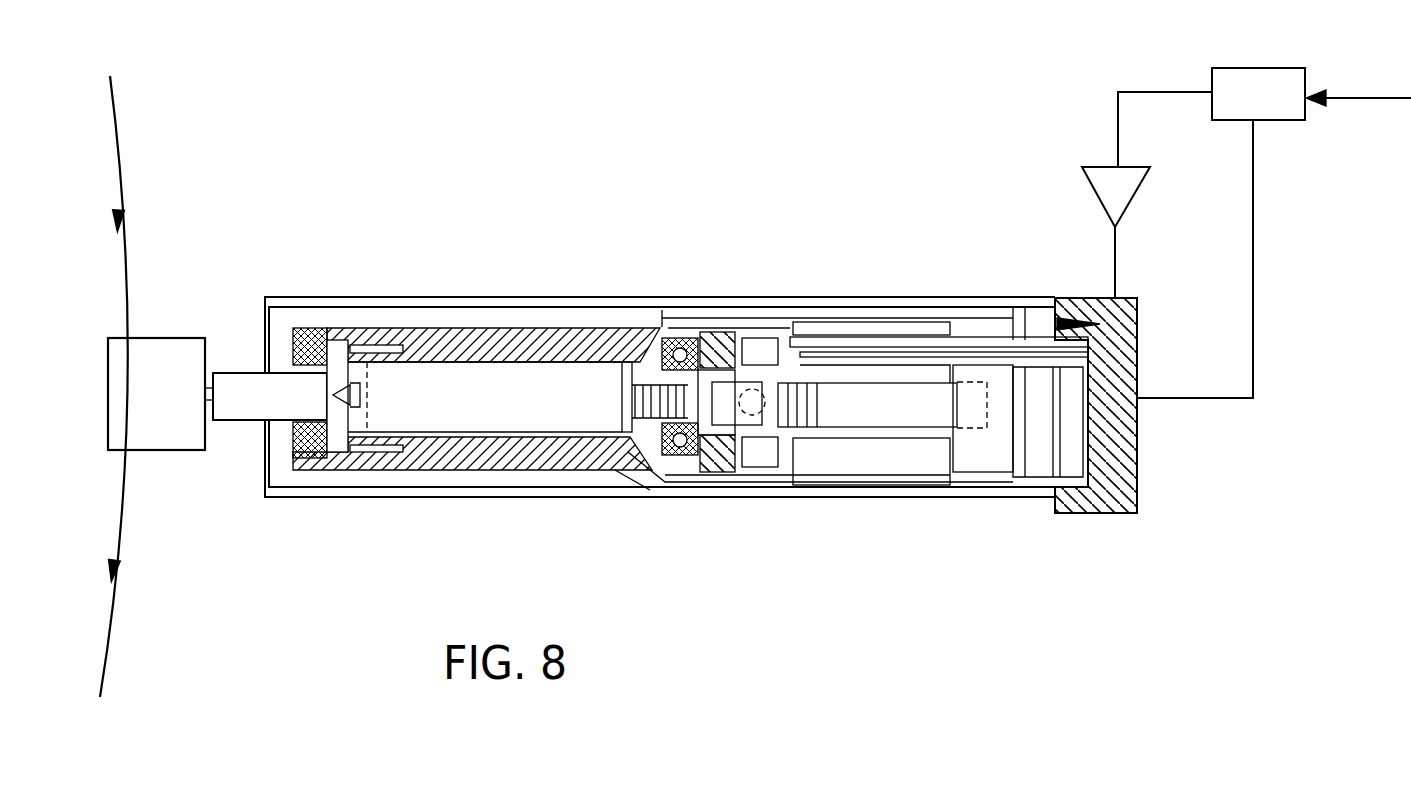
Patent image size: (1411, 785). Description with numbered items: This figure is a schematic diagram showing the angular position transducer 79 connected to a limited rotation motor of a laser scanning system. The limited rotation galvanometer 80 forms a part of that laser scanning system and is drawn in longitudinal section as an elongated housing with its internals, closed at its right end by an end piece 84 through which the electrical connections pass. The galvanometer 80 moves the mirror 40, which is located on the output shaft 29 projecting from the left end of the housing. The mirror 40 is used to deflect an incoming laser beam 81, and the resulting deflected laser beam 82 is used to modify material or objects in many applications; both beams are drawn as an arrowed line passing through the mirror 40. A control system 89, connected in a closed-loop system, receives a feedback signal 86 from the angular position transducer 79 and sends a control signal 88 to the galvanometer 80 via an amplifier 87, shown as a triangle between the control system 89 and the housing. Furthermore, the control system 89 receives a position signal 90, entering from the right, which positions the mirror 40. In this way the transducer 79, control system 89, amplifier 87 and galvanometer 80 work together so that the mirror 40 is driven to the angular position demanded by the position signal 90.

The output shaft 29 is at (243, 410).
The mirror 40 is at (113, 355).
The angular position transducer 79 is at (972, 532).
The limited rotation galvanometer 80 is at (708, 130).
The incoming laser beam 81 is at (110, 625).
The deflected laser beam 82 is at (118, 162).
The end cap 84 is at (1105, 493).
The feedback signal 86 is at (1254, 320).
The amplifier 87 is at (1092, 197).
The control signal 88 is at (1112, 255).
The control system 89 is at (1230, 67).
The position signal 90 is at (1350, 97).